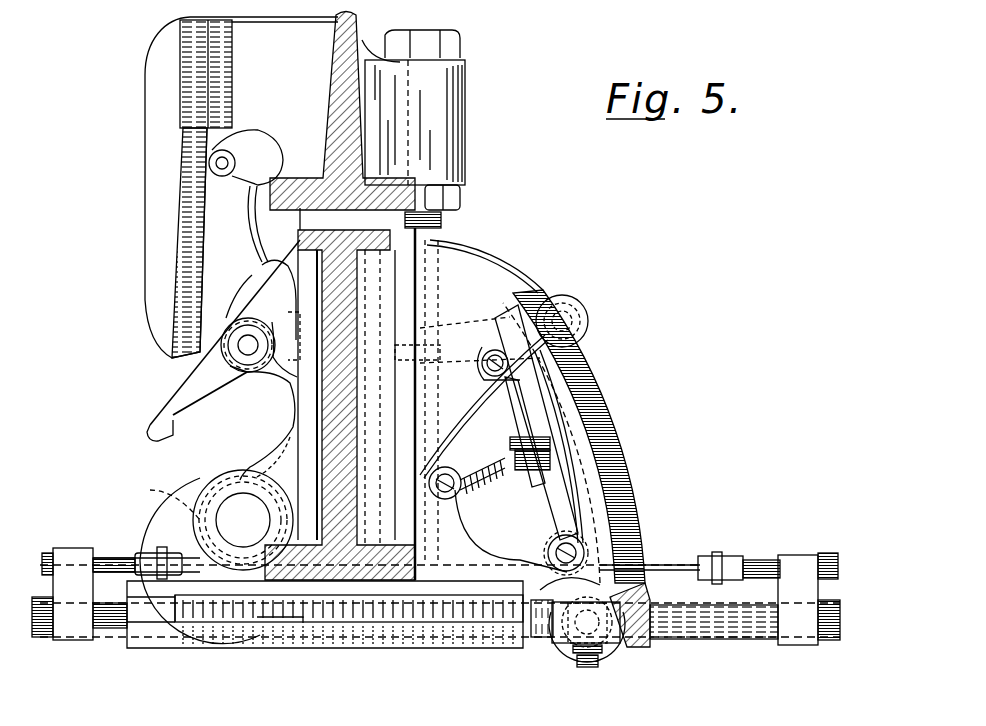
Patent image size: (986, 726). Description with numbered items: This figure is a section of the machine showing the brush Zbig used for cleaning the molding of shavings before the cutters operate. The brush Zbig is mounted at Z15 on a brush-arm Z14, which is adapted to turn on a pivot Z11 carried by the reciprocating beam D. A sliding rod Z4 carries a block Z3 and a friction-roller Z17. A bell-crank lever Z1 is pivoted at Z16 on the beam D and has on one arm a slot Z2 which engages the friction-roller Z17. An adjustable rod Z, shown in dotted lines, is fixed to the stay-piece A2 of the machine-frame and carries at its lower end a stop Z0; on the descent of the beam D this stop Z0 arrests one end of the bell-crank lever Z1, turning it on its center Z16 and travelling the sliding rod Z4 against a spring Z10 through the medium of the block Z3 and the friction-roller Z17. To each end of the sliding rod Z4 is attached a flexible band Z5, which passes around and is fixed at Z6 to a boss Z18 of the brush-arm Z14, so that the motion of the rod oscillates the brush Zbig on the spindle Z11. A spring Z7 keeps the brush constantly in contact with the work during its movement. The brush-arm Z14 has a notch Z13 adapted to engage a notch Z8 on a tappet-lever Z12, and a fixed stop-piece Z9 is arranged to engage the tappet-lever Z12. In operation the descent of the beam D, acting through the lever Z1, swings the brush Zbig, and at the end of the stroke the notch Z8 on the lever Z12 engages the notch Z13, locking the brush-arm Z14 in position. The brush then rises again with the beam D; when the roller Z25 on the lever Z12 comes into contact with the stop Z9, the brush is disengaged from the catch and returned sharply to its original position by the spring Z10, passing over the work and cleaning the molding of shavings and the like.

The fixed stop-piece Z9 is at (193, 238).
The roller Z25 is at (232, 152).
The stay-piece A2 is at (458, 108).
The adjustable rod Z is at (445, 222).
The reciprocating beam D is at (352, 395).
The notch Z8 is at (176, 427).
The tappet-lever Z12 is at (158, 413).
The pivot Z11 is at (243, 520).
The fixing point of flexible band Z6 is at (218, 478).
The boss Z18 is at (205, 518).
The flexible band Z5 is at (198, 560).
The sliding rod Z4 is at (748, 625).
The brush-arm Z14 is at (340, 630).
The notch Z13 is at (268, 630).
The bell-crank lever Z1 is at (450, 322).
The pivot Z16 is at (585, 325).
The brush Zbig is at (600, 405).
The spring Z7 is at (495, 478).
The stop Z0 is at (420, 462).
The brush mounting Z15 is at (552, 552).
The slot Z2 is at (610, 650).
The spring Z10 is at (545, 640).
The friction-roller Z17 is at (575, 660).
The block Z3 is at (588, 672).